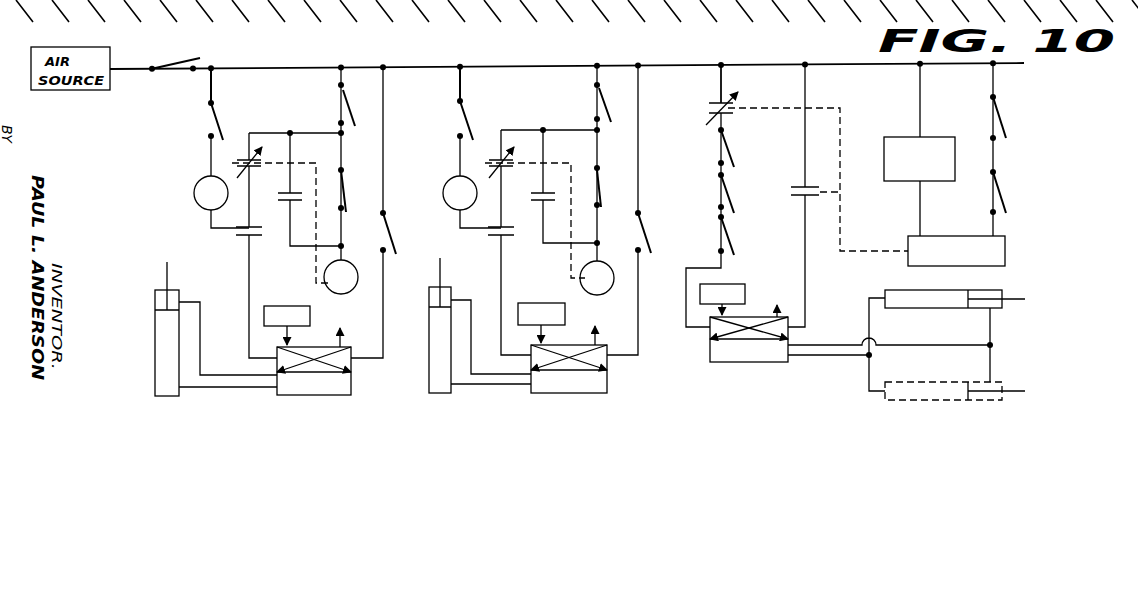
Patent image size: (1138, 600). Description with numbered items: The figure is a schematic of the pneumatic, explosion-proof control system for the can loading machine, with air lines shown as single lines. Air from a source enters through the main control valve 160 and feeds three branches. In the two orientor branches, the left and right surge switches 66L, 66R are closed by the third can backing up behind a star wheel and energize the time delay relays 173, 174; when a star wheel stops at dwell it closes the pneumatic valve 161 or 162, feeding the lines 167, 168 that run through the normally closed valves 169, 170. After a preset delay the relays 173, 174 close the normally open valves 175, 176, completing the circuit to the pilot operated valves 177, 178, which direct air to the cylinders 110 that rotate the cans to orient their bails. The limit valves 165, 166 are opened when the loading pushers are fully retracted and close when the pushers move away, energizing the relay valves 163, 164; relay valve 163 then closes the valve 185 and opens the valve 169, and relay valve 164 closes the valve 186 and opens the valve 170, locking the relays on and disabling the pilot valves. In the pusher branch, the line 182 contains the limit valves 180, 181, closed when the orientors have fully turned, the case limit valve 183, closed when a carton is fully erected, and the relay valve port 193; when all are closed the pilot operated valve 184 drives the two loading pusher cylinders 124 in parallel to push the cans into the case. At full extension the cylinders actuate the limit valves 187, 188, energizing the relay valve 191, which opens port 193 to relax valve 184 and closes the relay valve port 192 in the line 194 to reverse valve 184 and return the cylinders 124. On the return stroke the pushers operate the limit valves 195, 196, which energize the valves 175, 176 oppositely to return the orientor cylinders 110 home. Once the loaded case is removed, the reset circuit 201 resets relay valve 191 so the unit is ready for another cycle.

The main control valve 160 is at (180, 77).
The left surge switch 66L is at (211, 117).
The right surge switch 66R is at (458, 109).
The left star wheel pneumatic valve 161 is at (352, 92).
The right star wheel pneumatic valve 162 is at (603, 95).
The left line 167 is at (277, 133).
The right line 168 is at (530, 130).
The normally closed valve 169 is at (240, 158).
The normally closed valve 170 is at (495, 155).
The left time delay relay 173 is at (194, 192).
The right time delay relay 174 is at (447, 188).
The normally open valve 175 is at (240, 236).
The normally open valve 176 is at (494, 237).
The relay controlled valve 185 is at (283, 206).
The relay controlled valve 186 is at (538, 208).
The left relay valve 163 is at (324, 282).
The right relay valve 164 is at (580, 280).
The left limit valve 165 is at (345, 185).
The right limit valve 166 is at (600, 187).
The left return limit valve 195 is at (398, 245).
The right return limit valve 196 is at (648, 226).
The left pilot operated valve 177 is at (352, 363).
The right pilot operated valve 178 is at (608, 362).
The orientor cylinder 110 is at (155, 338).
The line 182 is at (723, 85).
The relay valve port 193 is at (712, 115).
The case limit valve 183 is at (727, 150).
The left orientor limit valve 180 is at (727, 190).
The right orientor limit valve 181 is at (730, 238).
The pilot operated valve 184 is at (710, 330).
The relay valve port 192 is at (810, 210).
The line 194 is at (808, 82).
The reset circuit 201 is at (945, 137).
The left extension limit valve 187 is at (1002, 118).
The right extension limit valve 188 is at (1002, 188).
The relay valve 191 is at (1005, 245).
The loading pusher cylinder 124 is at (965, 290).